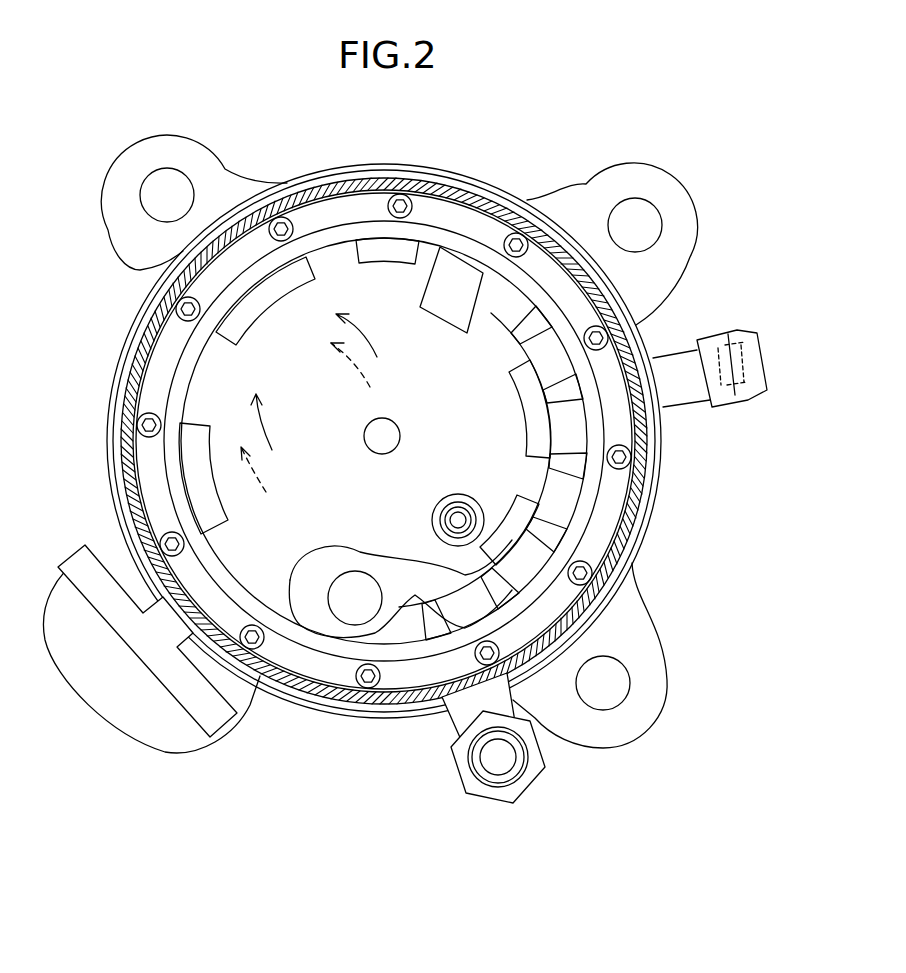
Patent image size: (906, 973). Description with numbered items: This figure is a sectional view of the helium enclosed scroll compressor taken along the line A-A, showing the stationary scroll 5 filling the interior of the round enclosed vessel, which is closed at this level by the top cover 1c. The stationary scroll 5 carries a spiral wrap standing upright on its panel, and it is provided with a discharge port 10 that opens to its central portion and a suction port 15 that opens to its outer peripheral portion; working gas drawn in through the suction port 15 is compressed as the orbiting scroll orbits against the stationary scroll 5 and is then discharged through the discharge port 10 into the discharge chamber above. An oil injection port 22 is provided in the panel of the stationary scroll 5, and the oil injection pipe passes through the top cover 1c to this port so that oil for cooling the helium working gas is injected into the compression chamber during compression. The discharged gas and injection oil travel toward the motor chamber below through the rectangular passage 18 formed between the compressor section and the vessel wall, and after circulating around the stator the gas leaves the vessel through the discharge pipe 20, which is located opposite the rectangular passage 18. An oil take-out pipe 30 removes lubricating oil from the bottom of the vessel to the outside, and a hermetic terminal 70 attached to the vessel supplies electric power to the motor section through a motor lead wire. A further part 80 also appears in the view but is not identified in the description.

The top cover 1c is at (652, 500).
The stationary scroll 5 is at (373, 312).
The discharge port 10 is at (384, 434).
The suction port 15 is at (356, 600).
The rectangular passage 18 is at (138, 272).
The discharge pipe 20 is at (465, 762).
The oil injection port 22 is at (458, 518).
The oil take-out pipe 30 is at (683, 393).
The hermetic terminal 70 is at (142, 715).
The mounting ear 80 is at (658, 674).